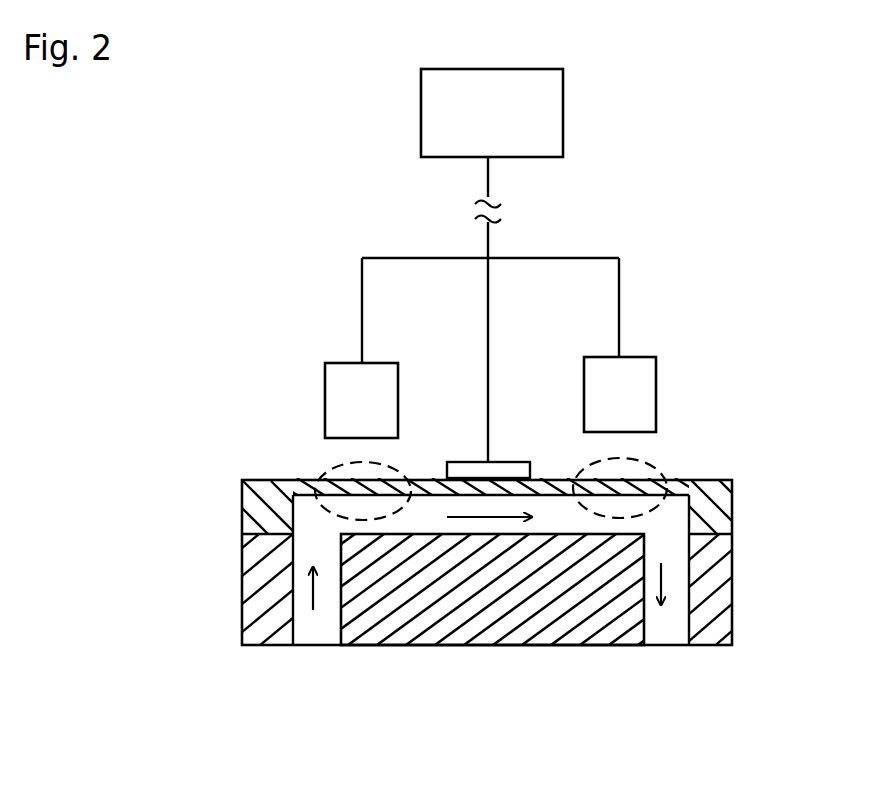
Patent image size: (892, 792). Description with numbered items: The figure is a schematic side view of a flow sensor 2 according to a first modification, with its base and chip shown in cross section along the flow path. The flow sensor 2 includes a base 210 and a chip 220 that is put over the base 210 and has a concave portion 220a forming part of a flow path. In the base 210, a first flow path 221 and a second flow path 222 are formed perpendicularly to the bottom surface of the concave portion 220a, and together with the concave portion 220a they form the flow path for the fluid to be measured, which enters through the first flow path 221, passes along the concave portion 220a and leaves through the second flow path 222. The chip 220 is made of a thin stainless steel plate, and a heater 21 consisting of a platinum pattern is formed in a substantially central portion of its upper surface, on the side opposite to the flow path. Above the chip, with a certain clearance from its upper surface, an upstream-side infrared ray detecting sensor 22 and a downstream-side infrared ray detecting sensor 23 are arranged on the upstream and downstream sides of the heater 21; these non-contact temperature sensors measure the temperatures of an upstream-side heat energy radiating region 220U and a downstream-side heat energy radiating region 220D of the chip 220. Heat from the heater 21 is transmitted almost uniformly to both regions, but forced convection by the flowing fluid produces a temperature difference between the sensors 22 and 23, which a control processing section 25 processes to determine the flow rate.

The flow sensor 2 is at (684, 87).
The heater 21 is at (523, 462).
The upstream-side infrared ray detecting sensor 22 is at (325, 390).
The downstream-side infrared ray detecting sensor 23 is at (656, 363).
The control processing section 25 is at (563, 118).
The base 210 is at (538, 627).
The chip 220 is at (713, 477).
The concave portion 220a is at (313, 518).
The upstream-side heat energy radiating region 220U is at (403, 470).
The downstream-side heat energy radiating region 220D is at (657, 463).
The first flow path 221 is at (307, 627).
The second flow path 222 is at (663, 627).